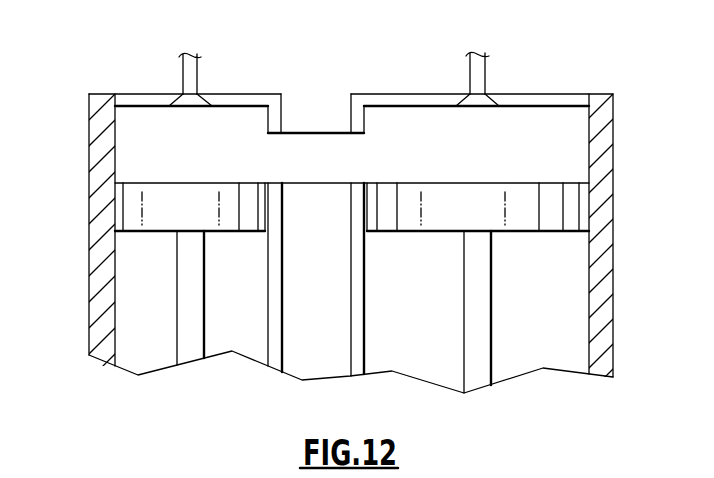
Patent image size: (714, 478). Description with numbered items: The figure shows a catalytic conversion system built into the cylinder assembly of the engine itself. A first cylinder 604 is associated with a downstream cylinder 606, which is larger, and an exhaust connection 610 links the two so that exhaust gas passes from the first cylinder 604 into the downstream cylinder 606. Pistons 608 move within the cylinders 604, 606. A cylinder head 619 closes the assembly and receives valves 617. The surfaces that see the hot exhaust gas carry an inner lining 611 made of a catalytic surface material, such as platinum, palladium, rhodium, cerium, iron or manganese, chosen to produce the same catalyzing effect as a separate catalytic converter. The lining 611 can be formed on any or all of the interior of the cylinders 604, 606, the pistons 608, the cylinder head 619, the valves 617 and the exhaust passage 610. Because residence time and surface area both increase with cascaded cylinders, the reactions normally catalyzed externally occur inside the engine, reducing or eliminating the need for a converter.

The first cylinder 604 is at (102, 115).
The downstream cylinder 606 is at (357, 103).
The pistons 608 is at (167, 209).
The exhaust connection 610 is at (318, 148).
The inner lining 611 is at (115, 133).
The valves 617 is at (203, 93).
The cylinder head 619 is at (148, 93).